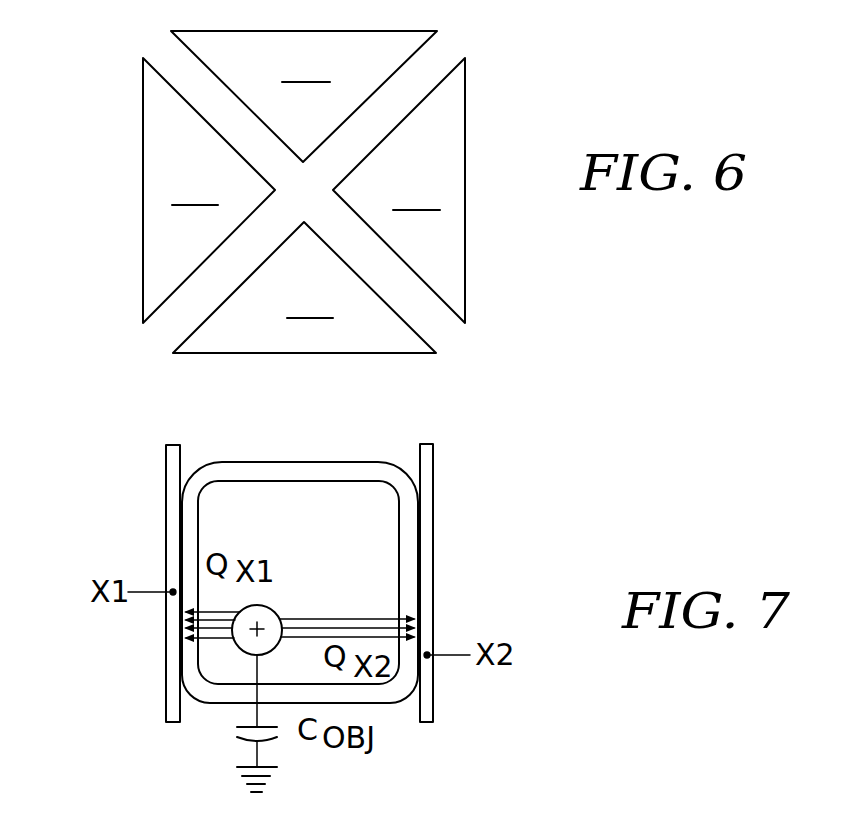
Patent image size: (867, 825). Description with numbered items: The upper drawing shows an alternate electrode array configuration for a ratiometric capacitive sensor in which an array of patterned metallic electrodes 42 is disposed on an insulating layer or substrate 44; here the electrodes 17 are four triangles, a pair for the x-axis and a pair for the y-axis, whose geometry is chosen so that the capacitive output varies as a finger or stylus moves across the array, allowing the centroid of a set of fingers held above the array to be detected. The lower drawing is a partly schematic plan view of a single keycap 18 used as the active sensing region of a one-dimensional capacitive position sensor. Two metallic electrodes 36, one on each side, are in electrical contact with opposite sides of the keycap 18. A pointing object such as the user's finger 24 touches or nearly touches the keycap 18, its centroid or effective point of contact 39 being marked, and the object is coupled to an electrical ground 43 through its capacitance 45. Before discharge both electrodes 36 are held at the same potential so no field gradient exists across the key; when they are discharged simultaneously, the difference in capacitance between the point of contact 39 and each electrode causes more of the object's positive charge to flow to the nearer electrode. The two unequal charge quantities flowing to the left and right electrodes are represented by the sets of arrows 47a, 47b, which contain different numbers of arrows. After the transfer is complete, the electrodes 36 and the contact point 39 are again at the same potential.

In FIG. 6, the electrodes 17 is at (364, 176).
In FIG. 6, the patterned metallic electrodes 42 is at (497, 258).
In FIG. 6, the insulating layer or substrate 44 is at (138, 378).
In FIG. 7, the keycap 18 is at (300, 551).
In FIG. 7, the metallic electrodes 36 is at (170, 493).
In FIG. 7, the user's finger 24 is at (270, 605).
In FIG. 7, the effective point of contact 39 is at (262, 628).
In FIG. 7, the set of arrows 47a is at (217, 645).
In FIG. 7, the set of arrows 47b is at (372, 622).
In FIG. 7, the capacitance 45 is at (237, 730).
In FIG. 7, the electrical ground 43 is at (277, 773).